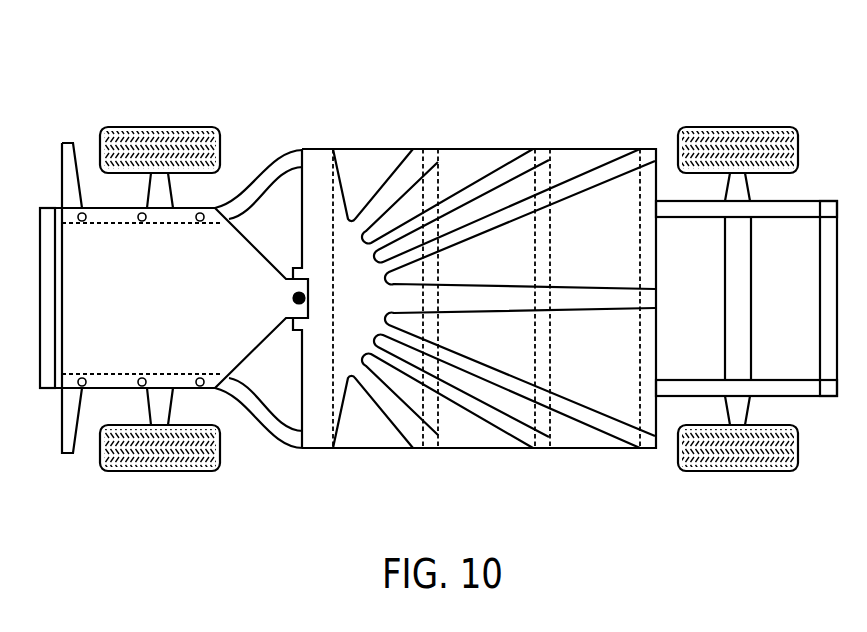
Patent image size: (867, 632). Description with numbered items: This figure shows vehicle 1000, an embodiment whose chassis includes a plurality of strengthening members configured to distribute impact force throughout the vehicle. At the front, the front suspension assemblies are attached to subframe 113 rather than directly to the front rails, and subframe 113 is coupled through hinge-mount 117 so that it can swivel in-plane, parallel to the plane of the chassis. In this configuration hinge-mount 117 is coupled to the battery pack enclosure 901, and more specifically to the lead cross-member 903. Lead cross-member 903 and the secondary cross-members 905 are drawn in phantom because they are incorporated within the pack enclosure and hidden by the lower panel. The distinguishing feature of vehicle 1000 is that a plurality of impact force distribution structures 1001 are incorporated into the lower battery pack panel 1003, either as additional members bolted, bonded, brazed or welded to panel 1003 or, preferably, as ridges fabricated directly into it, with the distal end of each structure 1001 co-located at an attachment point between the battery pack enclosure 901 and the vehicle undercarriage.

The vehicle 1000 is at (632, 82).
The subframe 113 is at (172, 309).
The hinge-mount 117 is at (296, 296).
The battery pack enclosure 901 is at (475, 436).
The lead cross-member 903 is at (316, 163).
The secondary cross-members 905 is at (437, 188).
The impact force distribution structures 1001 is at (398, 183).
The lower battery pack panel 1003 is at (525, 271).